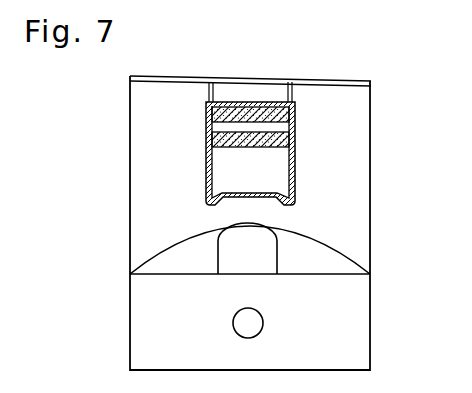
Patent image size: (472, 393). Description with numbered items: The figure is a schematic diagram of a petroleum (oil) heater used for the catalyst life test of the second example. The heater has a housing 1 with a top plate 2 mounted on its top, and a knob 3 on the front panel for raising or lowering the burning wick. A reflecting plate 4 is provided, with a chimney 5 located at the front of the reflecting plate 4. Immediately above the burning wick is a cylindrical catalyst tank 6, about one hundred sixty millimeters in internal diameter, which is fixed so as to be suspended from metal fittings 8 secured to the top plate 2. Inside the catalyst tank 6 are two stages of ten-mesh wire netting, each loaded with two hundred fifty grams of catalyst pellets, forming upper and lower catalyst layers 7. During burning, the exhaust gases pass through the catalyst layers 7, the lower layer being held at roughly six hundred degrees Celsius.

The housing 1 is at (369, 261).
The top plate 2 is at (355, 80).
The knob 3 is at (257, 323).
The reflecting plate 4 is at (157, 213).
The chimney 5 is at (268, 228).
The catalyst tank 6 is at (295, 182).
The catalyst layers 7 is at (295, 117).
The metal fittings 8 is at (295, 92).